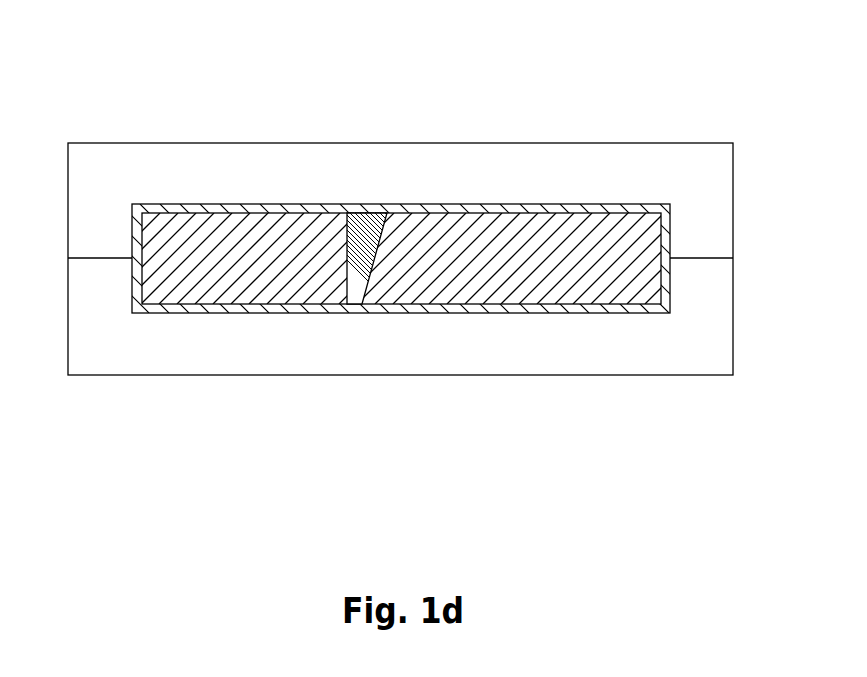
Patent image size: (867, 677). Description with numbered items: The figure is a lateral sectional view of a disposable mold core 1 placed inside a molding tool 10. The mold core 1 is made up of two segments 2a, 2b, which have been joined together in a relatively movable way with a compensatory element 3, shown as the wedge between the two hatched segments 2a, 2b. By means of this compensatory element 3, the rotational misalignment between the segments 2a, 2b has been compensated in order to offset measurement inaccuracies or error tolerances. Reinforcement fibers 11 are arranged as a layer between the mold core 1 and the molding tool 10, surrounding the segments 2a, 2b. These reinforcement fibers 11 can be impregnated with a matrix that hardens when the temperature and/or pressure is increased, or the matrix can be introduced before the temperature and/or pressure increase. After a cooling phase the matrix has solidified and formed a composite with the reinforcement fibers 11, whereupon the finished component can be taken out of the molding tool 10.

The disposable mold core 1 is at (306, 252).
The segment 2a is at (220, 252).
The segment 2b is at (529, 260).
The compensatory element 3 is at (362, 212).
The molding tool 10 is at (714, 410).
The reinforcement fibers 11 is at (630, 205).